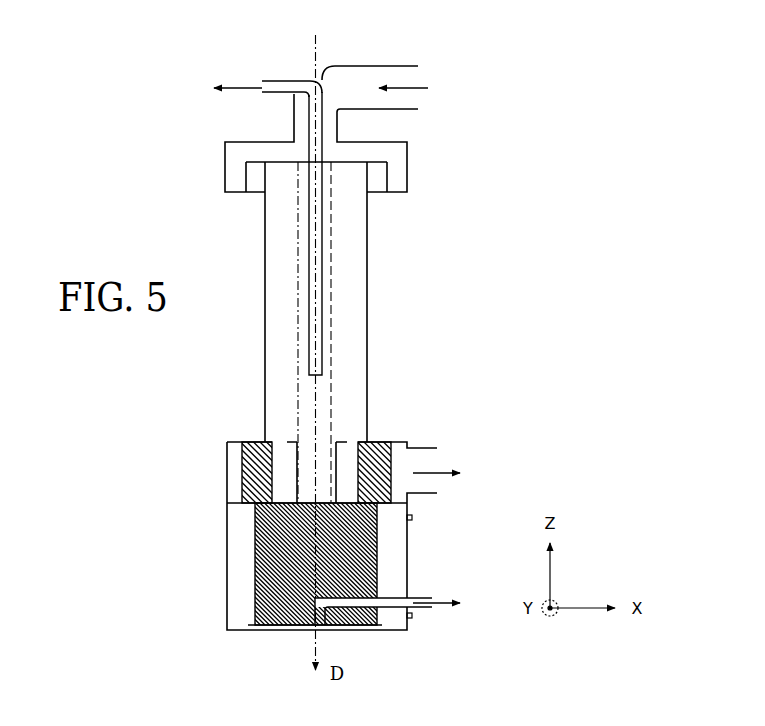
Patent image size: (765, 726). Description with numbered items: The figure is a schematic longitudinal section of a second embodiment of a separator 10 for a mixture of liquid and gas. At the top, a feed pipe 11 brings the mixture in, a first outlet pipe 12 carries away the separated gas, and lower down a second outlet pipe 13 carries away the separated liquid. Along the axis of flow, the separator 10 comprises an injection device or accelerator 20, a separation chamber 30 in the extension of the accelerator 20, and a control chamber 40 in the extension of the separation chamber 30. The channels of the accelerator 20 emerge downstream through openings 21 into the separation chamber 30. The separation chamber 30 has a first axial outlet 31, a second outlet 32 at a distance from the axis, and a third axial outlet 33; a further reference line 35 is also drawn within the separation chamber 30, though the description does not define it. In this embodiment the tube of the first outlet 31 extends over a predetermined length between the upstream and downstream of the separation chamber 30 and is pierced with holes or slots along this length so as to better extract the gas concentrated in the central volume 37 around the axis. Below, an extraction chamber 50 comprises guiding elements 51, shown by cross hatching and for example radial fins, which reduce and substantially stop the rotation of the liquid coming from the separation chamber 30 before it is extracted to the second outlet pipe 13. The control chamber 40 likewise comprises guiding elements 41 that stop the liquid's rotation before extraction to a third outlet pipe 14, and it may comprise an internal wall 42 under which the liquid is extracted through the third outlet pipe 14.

The separator 10 is at (509, 244).
The feed pipe 11 is at (384, 65).
The first outlet pipe 12 is at (280, 81).
The second outlet pipe 13 is at (421, 448).
The third outlet pipe 14 is at (422, 609).
The injection device or accelerator 20 is at (396, 151).
The openings 21 is at (272, 186).
The separation chamber 30 is at (337, 358).
The first axial outlet 31 is at (299, 317).
The second outlet 32 is at (278, 435).
The third axial outlet 33 is at (326, 440).
The axis line 35 is at (297, 357).
The central volume 37 is at (330, 266).
The control chamber 40 is at (242, 618).
The guiding elements 41 is at (273, 557).
The internal wall 42 is at (271, 617).
The extraction chamber 50 is at (232, 458).
The guiding elements 51 is at (256, 478).